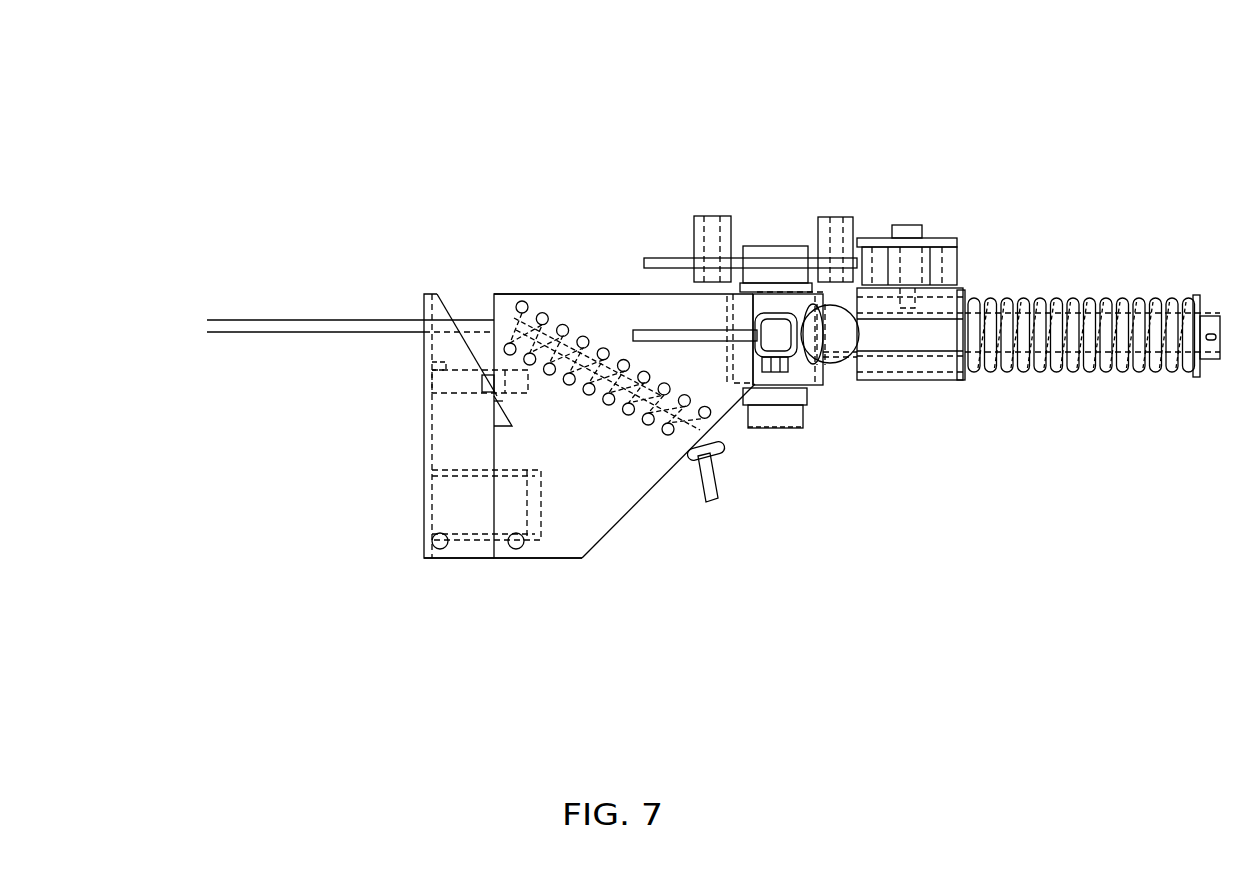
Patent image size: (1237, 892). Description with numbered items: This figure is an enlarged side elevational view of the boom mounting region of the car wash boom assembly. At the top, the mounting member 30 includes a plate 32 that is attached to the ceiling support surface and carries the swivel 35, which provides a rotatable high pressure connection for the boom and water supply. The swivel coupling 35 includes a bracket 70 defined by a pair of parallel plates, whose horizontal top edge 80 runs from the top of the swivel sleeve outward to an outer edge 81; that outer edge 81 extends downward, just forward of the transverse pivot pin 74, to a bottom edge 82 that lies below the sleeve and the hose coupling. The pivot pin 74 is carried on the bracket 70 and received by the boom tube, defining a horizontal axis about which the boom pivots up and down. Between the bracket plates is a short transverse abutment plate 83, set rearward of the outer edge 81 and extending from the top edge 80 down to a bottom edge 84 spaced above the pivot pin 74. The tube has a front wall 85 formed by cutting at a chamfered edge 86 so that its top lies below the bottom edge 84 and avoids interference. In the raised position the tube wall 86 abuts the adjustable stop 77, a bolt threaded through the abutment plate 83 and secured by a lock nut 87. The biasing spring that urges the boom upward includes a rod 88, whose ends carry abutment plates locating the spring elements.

The mounting member 30 is at (727, 365).
The plate 32 is at (656, 258).
The swivel 35 is at (777, 200).
The bracket 70 is at (604, 500).
The transverse pivot pin 74 is at (515, 548).
The adjustable stop 77 is at (445, 372).
The top edge 80 is at (640, 293).
The outer edge 81 is at (490, 296).
The bottom edge 82 is at (542, 558).
The transverse abutment plate 83 is at (512, 298).
The bottom edge 84 is at (503, 397).
The front wall 85 is at (522, 455).
The chamfered edge 86 is at (512, 437).
The lock nut 87 is at (513, 360).
The rod 88 is at (612, 322).